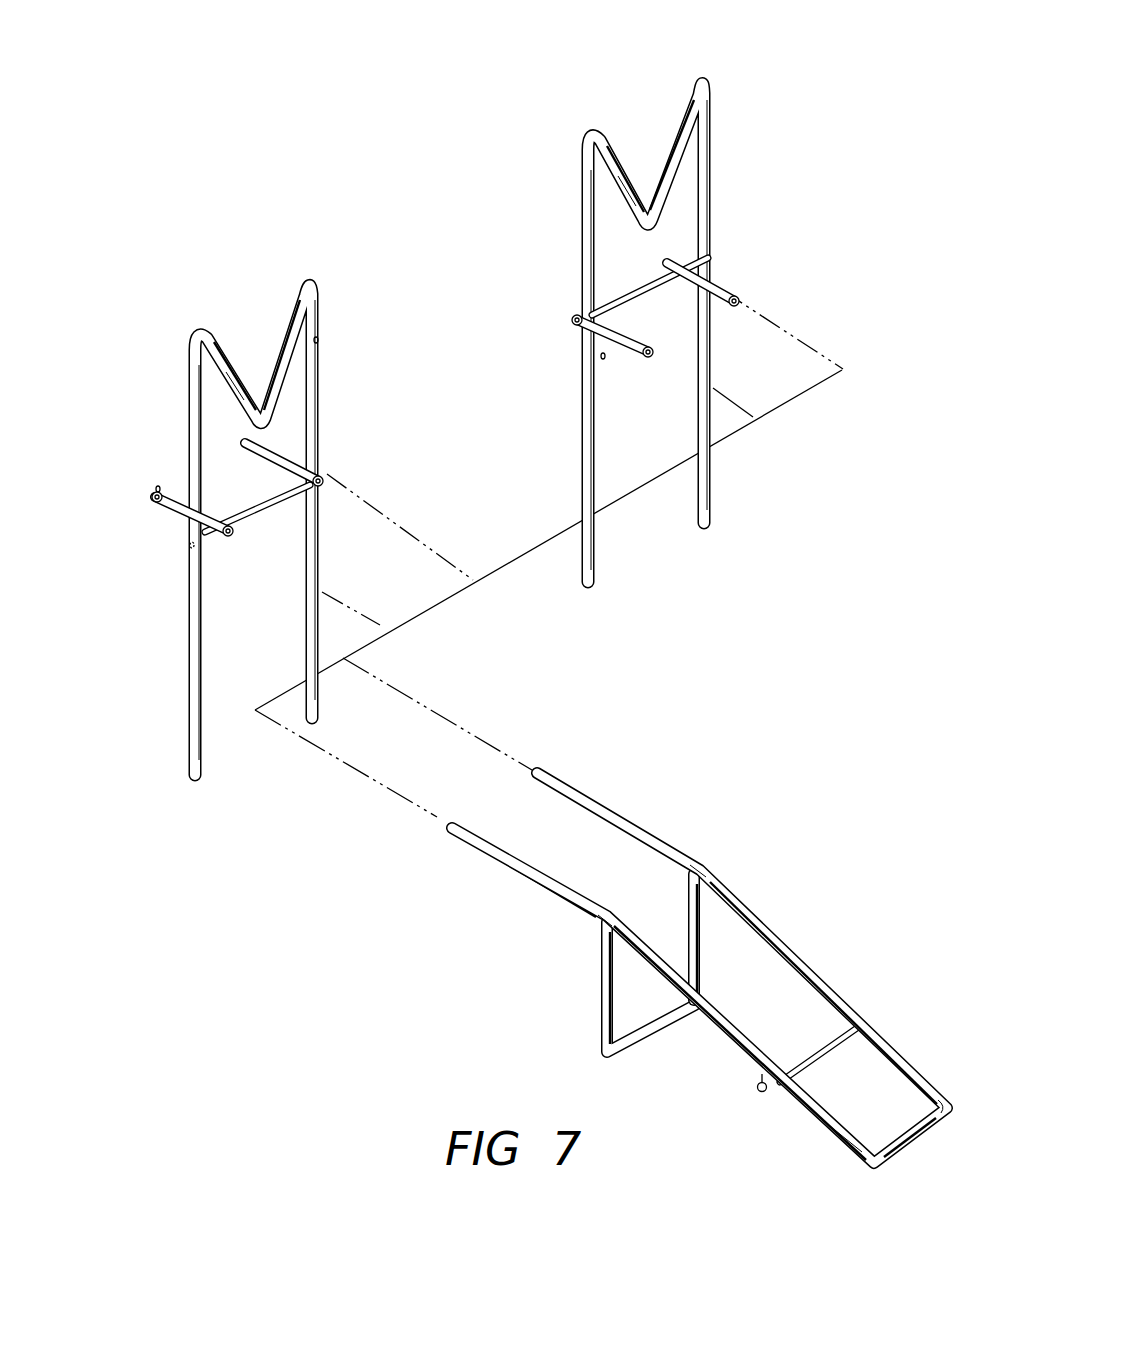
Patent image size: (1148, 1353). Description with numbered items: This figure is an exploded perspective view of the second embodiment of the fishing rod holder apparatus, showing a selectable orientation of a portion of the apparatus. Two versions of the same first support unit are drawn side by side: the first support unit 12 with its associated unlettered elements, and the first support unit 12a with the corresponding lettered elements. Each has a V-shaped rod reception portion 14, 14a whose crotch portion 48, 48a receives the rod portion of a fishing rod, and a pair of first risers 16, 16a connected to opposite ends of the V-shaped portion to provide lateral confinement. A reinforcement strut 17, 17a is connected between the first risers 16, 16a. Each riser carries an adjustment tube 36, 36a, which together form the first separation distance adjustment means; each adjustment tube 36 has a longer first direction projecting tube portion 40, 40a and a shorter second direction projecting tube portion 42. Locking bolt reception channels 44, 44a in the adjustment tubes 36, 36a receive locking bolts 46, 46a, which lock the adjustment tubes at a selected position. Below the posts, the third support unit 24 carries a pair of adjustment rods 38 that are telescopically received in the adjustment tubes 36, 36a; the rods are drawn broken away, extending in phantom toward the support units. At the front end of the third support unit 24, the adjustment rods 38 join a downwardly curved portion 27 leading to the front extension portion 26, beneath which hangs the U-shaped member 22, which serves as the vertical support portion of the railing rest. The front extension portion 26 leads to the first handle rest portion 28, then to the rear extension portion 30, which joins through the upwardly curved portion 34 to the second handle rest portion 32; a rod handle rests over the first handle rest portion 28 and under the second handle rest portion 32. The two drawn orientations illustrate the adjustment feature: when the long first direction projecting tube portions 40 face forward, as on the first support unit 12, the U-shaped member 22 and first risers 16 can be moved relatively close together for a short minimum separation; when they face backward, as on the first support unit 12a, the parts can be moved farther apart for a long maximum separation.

The first support unit 12 is at (317, 270).
The first support unit 12a is at (717, 140).
The V-shaped rod reception portion 14 is at (277, 333).
The V-shaped rod reception portion 14a is at (648, 215).
The first risers 16 is at (322, 385).
The first risers 16a is at (713, 197).
The reinforcement strut 17 is at (262, 493).
The reinforcement strut 17a is at (632, 292).
The U-shaped member 22 is at (650, 1048).
The third support unit 24 is at (813, 957).
The front extension portion 26 is at (758, 920).
The downwardly curved portion 27 is at (617, 920).
The first handle rest portion 28 is at (802, 1058).
The rear extension portion 30 is at (903, 1055).
The second handle rest portion 32 is at (927, 1135).
The upwardly curved portion 34 is at (837, 1140).
The adjustment tubes 36 is at (290, 447).
The adjustment tubes 36a is at (730, 268).
The adjustment rods 38 is at (583, 793).
The first direction projecting tube portion 40 is at (320, 340).
The first direction projecting tube portion 40a is at (652, 345).
The second direction projecting tube portion 42 is at (222, 542).
The locking bolt reception channels 44 is at (152, 497).
The locking bolt reception channels 44a is at (603, 358).
The locking bolts 46 is at (190, 547).
The locking bolts 46a is at (570, 322).
The crotch portion 48 is at (262, 372).
The crotch portion 48a is at (653, 210).